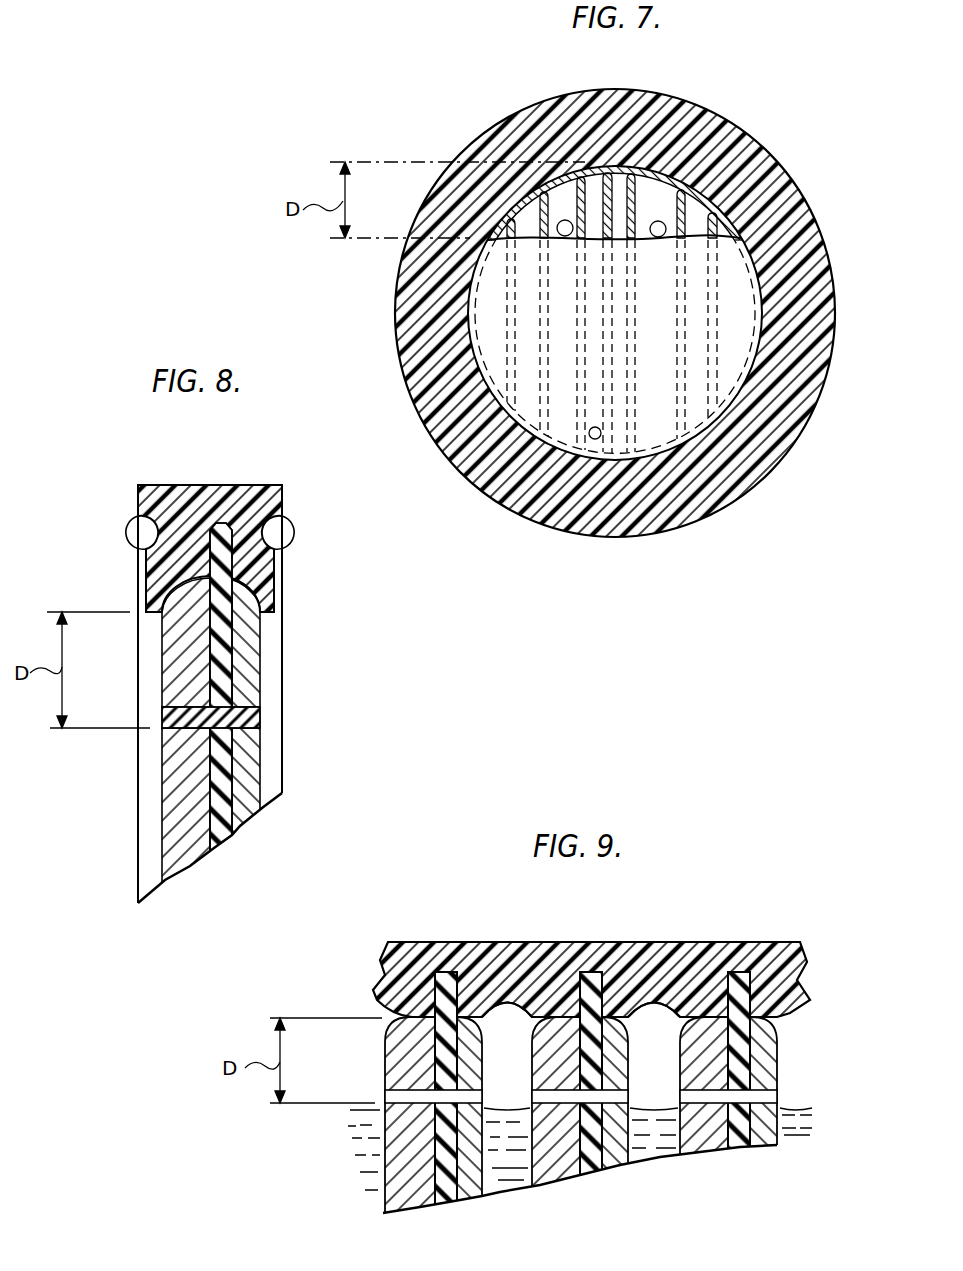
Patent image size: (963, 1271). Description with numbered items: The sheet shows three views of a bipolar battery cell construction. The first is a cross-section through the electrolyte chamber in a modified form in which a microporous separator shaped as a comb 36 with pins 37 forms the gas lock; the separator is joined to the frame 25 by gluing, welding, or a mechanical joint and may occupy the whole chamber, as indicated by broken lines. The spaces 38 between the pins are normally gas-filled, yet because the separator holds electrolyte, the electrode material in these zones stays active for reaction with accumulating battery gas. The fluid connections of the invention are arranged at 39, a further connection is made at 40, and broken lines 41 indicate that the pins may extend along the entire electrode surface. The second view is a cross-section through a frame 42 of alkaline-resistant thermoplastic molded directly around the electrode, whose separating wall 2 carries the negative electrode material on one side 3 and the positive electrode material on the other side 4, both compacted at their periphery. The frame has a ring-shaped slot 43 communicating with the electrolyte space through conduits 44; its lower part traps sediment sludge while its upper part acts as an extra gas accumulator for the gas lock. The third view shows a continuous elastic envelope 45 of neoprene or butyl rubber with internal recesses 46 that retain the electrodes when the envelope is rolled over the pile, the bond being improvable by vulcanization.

In FIG. 7, the frame 25 is at (730, 466).
In FIG. 7, the comb 36 is at (756, 150).
In FIG. 7, the pins 37 is at (683, 236).
In FIG. 7, the spaces 38 is at (565, 190).
In FIG. 7, the connections 39 is at (570, 238).
In FIG. 7, the connection 40 is at (592, 440).
In FIG. 7, the broken lines 41 is at (545, 326).
In FIG. 8, the frame 42 is at (233, 493).
In FIG. 8, the ring-shaped slot 43 is at (142, 533).
In FIG. 8, the conduits 44 is at (140, 584).
In FIG. 8, the negative electrode material side 3 is at (175, 651).
In FIG. 8, the positive electrode material side 4 is at (247, 655).
In FIG. 8, the separating wall 2 is at (228, 690).
In FIG. 9, the separating wall 2 is at (738, 990).
In FIG. 9, the envelope 45 is at (632, 962).
In FIG. 9, the recesses 46 is at (548, 1012).